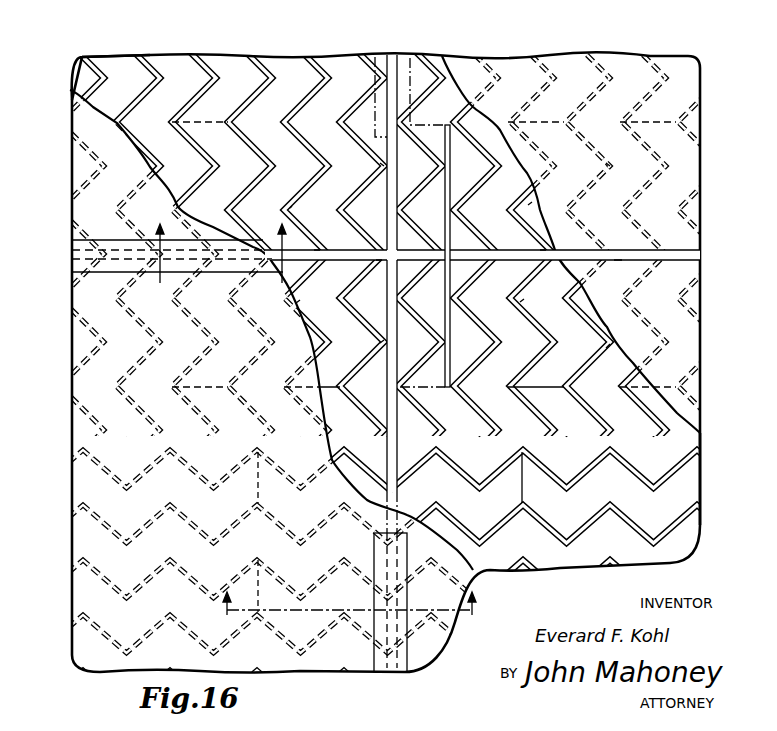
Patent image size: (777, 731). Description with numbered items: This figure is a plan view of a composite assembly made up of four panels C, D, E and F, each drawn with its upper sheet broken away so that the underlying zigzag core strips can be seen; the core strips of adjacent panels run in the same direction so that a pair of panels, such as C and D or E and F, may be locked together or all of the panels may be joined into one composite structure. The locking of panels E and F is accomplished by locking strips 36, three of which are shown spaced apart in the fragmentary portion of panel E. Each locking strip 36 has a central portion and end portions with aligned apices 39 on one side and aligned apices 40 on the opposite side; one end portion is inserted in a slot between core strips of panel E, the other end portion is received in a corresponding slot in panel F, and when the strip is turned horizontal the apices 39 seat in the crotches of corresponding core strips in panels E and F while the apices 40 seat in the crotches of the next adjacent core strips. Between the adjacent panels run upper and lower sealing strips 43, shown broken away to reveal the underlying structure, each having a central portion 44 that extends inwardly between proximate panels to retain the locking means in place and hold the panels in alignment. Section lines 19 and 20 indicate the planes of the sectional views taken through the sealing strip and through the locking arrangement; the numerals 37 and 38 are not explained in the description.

The section line 19- 19 is at (341, 618).
The section line 20- 20 is at (213, 266).
The locking strip 36 is at (212, 122).
The rib apex at channel 37 is at (316, 251).
The rib apex at channel 38 is at (377, 258).
The apices 39 is at (290, 206).
The apices 40 is at (380, 163).
The sealing strip 43 is at (410, 58).
The central portion 44 is at (120, 262).
The panel C is at (168, 68).
The panel D is at (103, 435).
The panel E is at (617, 68).
The panel F is at (675, 368).